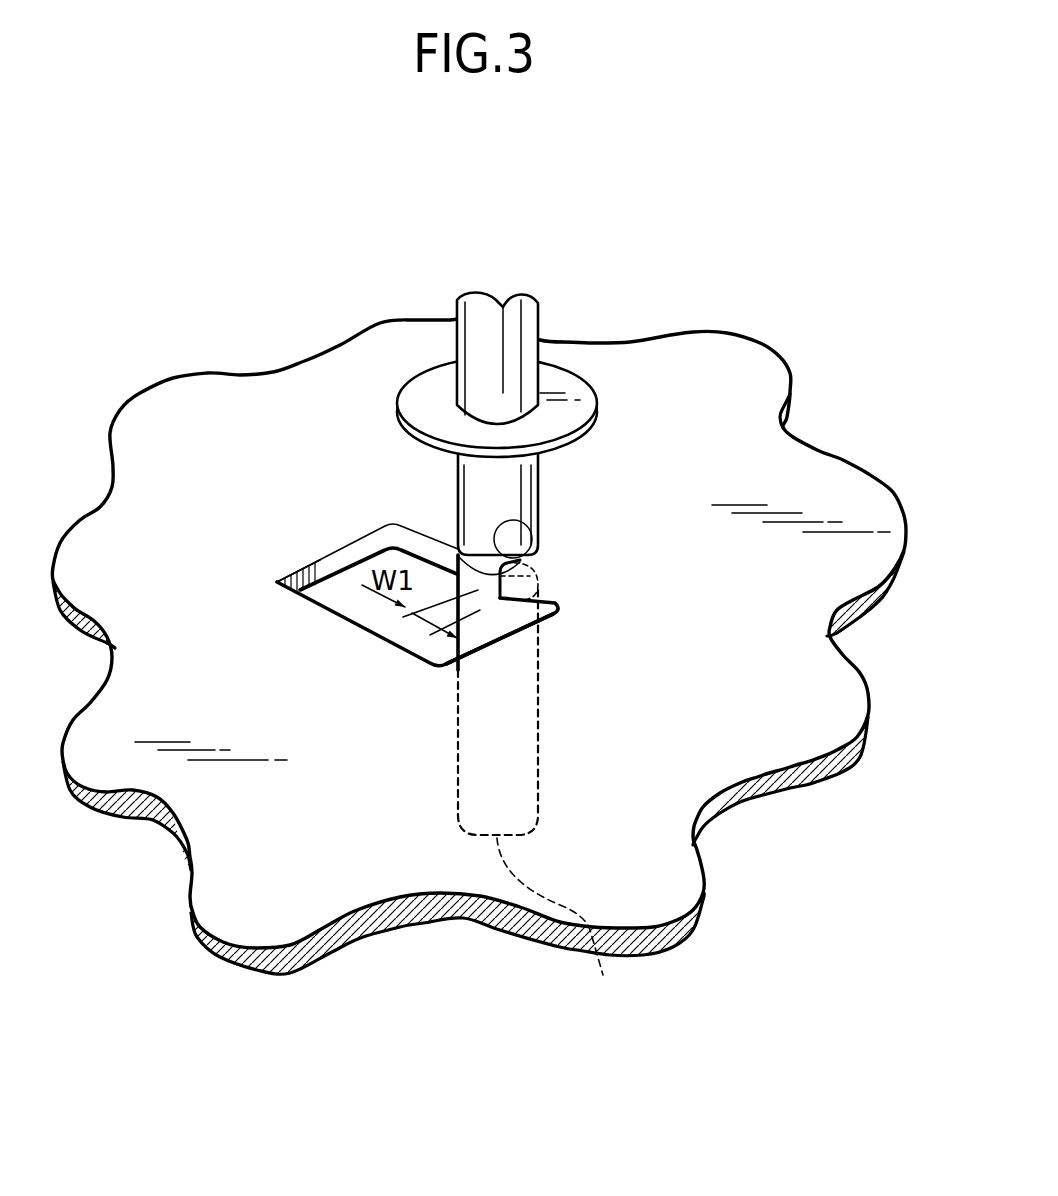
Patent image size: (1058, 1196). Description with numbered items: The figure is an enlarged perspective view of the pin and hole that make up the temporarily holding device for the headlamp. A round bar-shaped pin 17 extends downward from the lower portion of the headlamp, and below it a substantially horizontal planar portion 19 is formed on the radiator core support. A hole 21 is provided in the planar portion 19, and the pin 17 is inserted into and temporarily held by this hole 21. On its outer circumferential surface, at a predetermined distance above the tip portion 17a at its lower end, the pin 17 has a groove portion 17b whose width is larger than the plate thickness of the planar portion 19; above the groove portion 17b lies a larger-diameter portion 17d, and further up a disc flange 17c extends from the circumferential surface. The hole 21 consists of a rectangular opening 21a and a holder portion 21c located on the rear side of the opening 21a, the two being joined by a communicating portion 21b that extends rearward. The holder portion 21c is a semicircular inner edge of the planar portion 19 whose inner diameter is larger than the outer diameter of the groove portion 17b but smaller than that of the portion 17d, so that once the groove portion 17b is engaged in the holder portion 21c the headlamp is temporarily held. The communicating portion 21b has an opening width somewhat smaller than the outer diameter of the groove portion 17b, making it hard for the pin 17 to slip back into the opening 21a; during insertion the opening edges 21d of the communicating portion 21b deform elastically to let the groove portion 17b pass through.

The pin 17 is at (537, 345).
The tip portion 17a is at (549, 801).
The groove portion 17b is at (505, 578).
The disc flange 17c is at (585, 442).
The portion above the groove portion 17d is at (475, 490).
The planar portion 19 is at (358, 823).
The hole 21 is at (377, 607).
The rectangular opening 21a is at (352, 592).
The communicating portion 21b is at (478, 598).
The holder portion 21c is at (533, 529).
The opening edges 21d is at (420, 607).